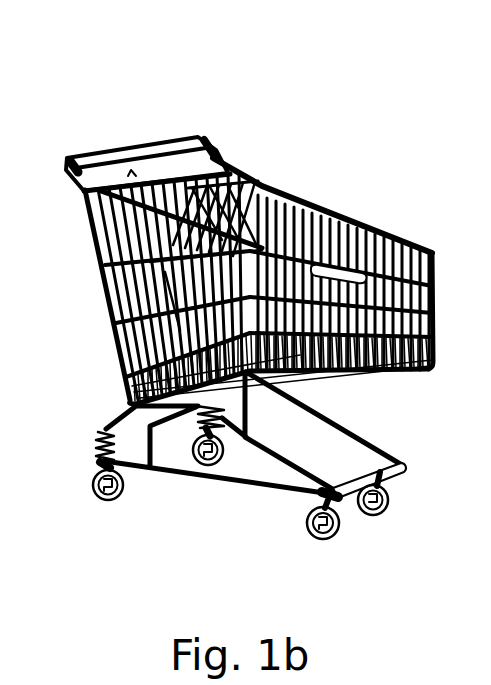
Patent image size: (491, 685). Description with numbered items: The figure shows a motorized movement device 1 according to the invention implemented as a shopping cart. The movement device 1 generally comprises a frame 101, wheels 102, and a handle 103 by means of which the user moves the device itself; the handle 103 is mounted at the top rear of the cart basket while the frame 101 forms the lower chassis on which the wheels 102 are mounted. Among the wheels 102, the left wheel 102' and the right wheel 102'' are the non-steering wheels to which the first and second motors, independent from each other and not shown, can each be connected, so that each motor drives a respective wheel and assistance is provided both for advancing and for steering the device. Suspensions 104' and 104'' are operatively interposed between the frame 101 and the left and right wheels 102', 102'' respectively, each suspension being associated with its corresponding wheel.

The motorized movement device 1 is at (120, 80).
The handle 103 is at (104, 157).
The frame 101 is at (116, 412).
The suspension 104'' is at (60, 463).
The suspension 104' is at (258, 502).
The right wheel 102'' is at (76, 529).
The left wheel 102' is at (176, 514).
The wheel 102 is at (376, 530).